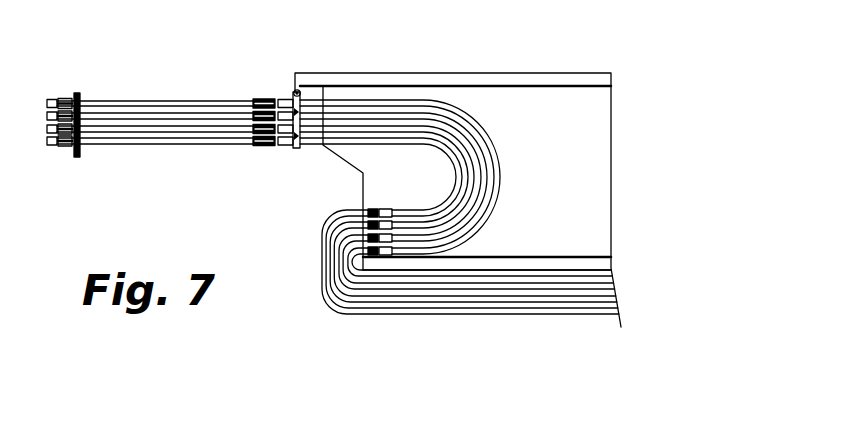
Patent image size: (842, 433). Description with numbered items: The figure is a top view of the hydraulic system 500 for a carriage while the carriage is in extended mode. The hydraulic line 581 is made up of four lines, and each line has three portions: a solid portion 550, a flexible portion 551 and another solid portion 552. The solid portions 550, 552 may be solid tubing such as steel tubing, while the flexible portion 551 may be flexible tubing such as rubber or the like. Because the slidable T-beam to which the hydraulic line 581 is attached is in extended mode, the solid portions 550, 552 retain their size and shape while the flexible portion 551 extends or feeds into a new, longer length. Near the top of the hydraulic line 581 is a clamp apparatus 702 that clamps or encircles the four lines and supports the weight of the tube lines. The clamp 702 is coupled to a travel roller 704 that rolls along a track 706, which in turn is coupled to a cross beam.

The hydraulic system 500 is at (667, 73).
The solid portion 550 is at (558, 272).
The flexible portion 551 is at (497, 178).
The solid portion 552 is at (153, 102).
The hydraulic line 581 is at (320, 303).
The clamp apparatus 702 is at (297, 150).
The travel roller 704 is at (298, 89).
The track 706 is at (447, 72).